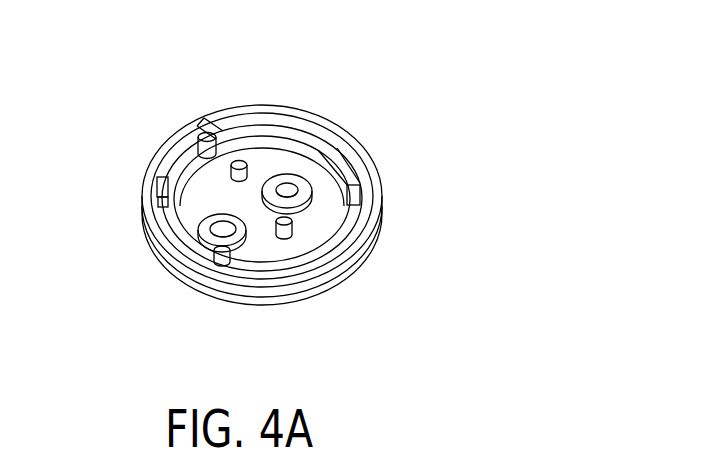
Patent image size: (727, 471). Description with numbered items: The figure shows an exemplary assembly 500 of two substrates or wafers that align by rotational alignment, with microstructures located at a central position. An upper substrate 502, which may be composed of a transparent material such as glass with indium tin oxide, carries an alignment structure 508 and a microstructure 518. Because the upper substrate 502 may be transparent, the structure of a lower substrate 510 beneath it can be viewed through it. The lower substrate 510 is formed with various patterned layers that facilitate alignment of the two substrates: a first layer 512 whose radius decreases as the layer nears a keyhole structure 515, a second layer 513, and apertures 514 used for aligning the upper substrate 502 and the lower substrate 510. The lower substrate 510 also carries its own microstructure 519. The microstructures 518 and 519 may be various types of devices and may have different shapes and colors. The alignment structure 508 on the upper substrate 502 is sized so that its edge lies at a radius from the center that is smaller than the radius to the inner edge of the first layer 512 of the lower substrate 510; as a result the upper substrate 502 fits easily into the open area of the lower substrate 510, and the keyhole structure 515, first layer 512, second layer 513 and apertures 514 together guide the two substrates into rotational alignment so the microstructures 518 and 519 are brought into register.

The base assembly 500 is at (112, 80).
The upper substrate 502 is at (263, 165).
The alignment structure 508 is at (358, 185).
The lower substrate 510 is at (268, 310).
The first layer 512 is at (142, 208).
The second layer 513 is at (193, 150).
The aperture 514 is at (214, 121).
The keyhole structure 515 is at (165, 170).
The microstructure 518 is at (293, 228).
The microstructure 519 is at (190, 237).